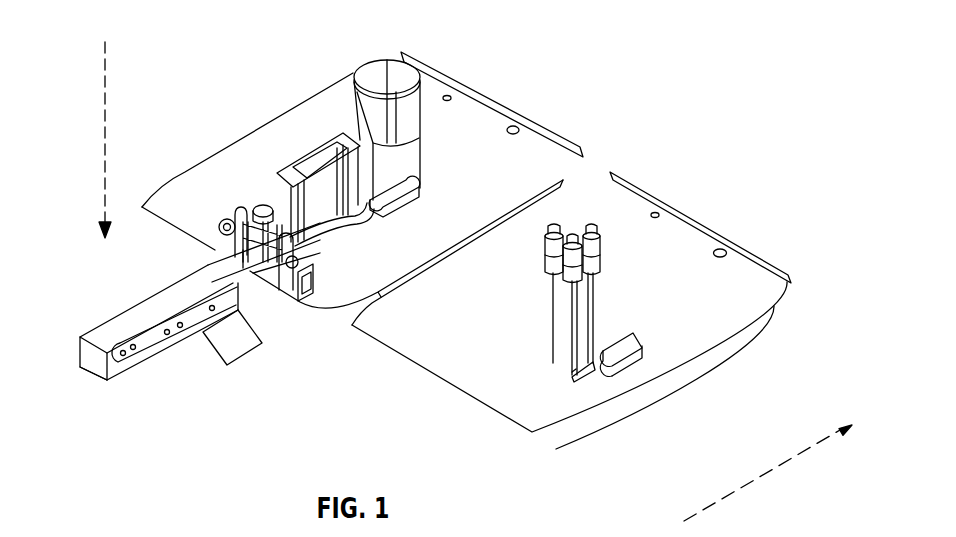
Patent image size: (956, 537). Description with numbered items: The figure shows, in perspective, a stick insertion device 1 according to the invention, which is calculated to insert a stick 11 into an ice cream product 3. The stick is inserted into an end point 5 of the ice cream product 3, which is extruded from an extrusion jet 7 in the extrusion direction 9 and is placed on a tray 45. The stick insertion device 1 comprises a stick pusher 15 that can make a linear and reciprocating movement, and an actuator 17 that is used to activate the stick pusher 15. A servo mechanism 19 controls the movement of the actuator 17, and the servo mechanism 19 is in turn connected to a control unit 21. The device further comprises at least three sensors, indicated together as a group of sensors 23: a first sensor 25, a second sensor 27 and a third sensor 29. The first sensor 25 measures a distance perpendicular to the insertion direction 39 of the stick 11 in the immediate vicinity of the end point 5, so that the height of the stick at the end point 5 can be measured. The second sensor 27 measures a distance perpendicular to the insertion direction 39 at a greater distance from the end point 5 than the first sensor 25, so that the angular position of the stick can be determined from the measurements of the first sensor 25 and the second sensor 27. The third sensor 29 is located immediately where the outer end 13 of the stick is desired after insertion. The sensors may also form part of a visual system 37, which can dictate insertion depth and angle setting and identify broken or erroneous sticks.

The stick insertion device 1 is at (247, 202).
The ice cream product 3 is at (434, 176).
The end point 5 is at (603, 377).
The extrusion jet 7 is at (430, 84).
The extrusion direction 9 is at (108, 96).
The stick 11 is at (586, 380).
The outer end 13 is at (580, 380).
The stick pusher 15 is at (328, 240).
The actuator 17 is at (112, 328).
The servo mechanism 19 is at (126, 377).
The control unit 21 is at (233, 337).
The group of sensors 23 is at (522, 281).
The first sensor 25 is at (605, 231).
The second sensor 27 is at (608, 220).
The third sensor 29 is at (578, 220).
The visual system 37 is at (613, 251).
The insertion direction 39 is at (757, 480).
The tray 45 is at (557, 212).